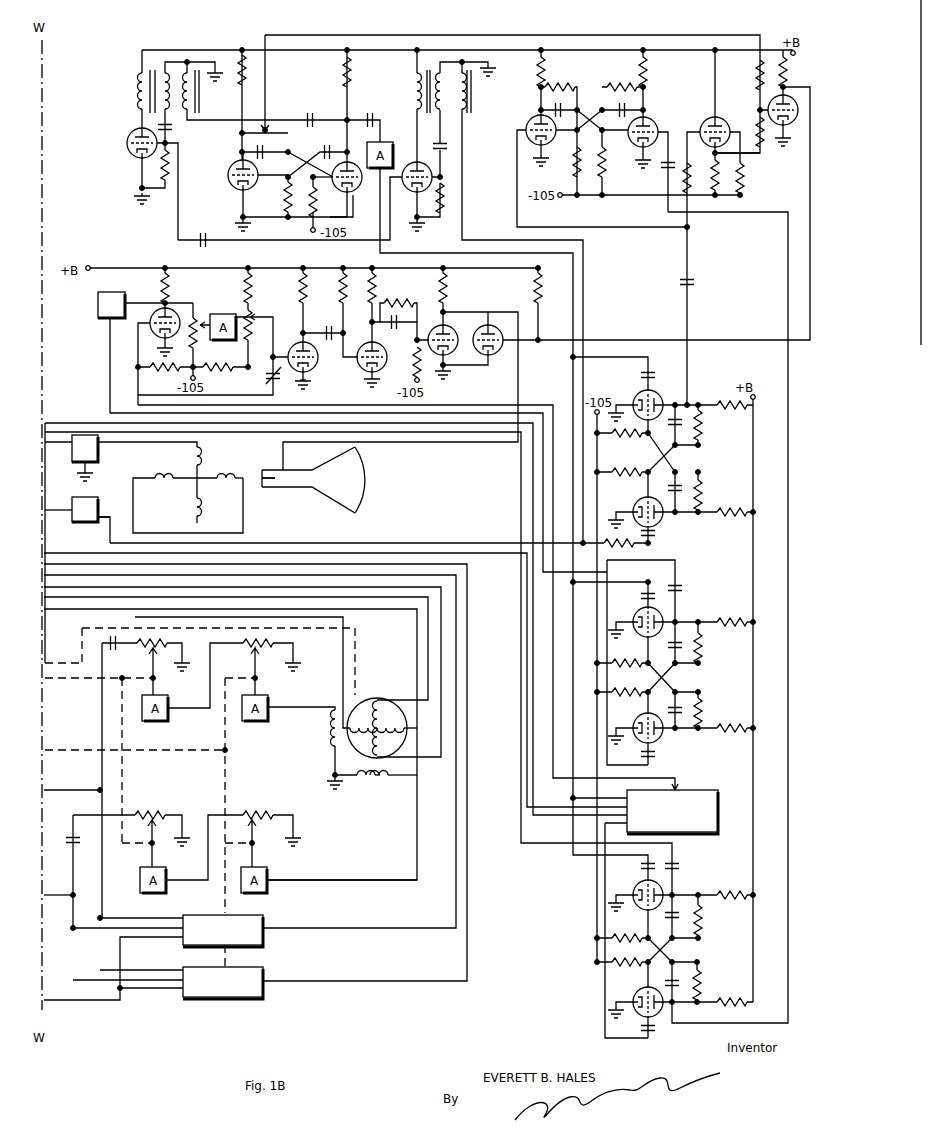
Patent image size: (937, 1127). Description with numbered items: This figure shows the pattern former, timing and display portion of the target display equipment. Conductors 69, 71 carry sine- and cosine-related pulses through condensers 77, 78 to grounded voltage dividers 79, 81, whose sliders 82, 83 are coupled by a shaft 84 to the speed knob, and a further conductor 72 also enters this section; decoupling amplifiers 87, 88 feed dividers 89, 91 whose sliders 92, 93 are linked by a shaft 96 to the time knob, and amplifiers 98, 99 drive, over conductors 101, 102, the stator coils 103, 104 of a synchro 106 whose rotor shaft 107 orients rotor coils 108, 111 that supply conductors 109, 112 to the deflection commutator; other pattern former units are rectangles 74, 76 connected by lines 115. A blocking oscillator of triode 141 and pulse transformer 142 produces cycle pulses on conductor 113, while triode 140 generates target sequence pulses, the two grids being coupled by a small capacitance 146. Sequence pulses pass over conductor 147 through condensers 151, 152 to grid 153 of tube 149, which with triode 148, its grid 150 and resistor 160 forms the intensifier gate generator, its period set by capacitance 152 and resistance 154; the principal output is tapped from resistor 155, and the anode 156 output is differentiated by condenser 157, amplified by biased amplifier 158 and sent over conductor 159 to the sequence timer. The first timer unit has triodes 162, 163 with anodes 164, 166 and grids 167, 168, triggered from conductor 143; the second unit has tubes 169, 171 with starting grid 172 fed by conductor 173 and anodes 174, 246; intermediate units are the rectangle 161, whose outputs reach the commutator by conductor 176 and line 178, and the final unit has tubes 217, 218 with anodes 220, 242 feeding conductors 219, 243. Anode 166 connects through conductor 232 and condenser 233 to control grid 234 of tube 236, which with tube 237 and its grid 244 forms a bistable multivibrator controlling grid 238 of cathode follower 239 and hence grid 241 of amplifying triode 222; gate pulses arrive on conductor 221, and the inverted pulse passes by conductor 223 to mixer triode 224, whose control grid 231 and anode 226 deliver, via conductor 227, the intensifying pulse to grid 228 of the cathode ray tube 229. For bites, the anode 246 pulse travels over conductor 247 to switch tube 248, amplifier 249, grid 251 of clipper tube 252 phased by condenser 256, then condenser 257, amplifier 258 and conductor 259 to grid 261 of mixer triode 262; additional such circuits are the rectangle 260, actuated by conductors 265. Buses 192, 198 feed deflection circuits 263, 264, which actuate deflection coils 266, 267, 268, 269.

The conductor 221 is at (735, 31).
The triode 149 is at (177, 40).
The triode 140 is at (128, 136).
The conductor 147 is at (234, 120).
The condenser 151 is at (300, 117).
The resistor 155 is at (240, 134).
The condenser 152 is at (328, 146).
The grid 153 is at (232, 185).
The resistor 154 is at (287, 208).
The anode 156 is at (346, 133).
The triode 148 is at (344, 204).
The grid 150 is at (331, 191).
The resistor 160 is at (339, 207).
The condenser 157 is at (370, 115).
The biased amplifier 158 is at (392, 147).
The conductor 159 is at (380, 228).
The capacitance 146 is at (203, 237).
The triode 141 is at (410, 190).
The pulse transformer 142 is at (500, 105).
The conductor 113 is at (465, 143).
The control grid 234 is at (528, 126).
The triode 236 is at (526, 137).
The triode 237 is at (637, 109).
The grid 244 is at (653, 130).
The conductor 243 is at (667, 172).
The cathode follower 239 is at (707, 122).
The grid 238 is at (736, 151).
The grid 241 is at (772, 104).
The amplifying triode 222 is at (779, 135).
The conductor 223 is at (809, 177).
The condenser 233 is at (685, 280).
The conductor 232 is at (686, 308).
The rectangle 260 is at (98, 305).
The switch tube 248 is at (192, 336).
The amplifier 249 is at (218, 313).
The conductor 247 is at (138, 398).
The grid 251 is at (307, 328).
The clipper amplifier tube 252 is at (316, 388).
The phasing condenser 256 is at (268, 382).
The condenser 257 is at (331, 323).
The amplifier 258 is at (358, 327).
The conductor 259 is at (388, 330).
The grid 261 is at (436, 311).
The triode 262 is at (400, 391).
The anode 226 is at (507, 311).
The mixer triode 224 is at (485, 363).
The control grid 231 is at (491, 352).
The conductor 227 is at (283, 457).
The intensifying grid 228 is at (286, 488).
The cathode ray tube 229 is at (368, 492).
The conductor 219 is at (64, 432).
The conductor 176 is at (80, 423).
The bus 192 is at (336, 619).
The deflection circuit 263 is at (96, 462).
The deflection coil 269 is at (200, 460).
The deflection coil 267 is at (193, 507).
The deflection coil 268 is at (188, 496).
The deflection coil 266 is at (230, 468).
The bus 198 is at (72, 510).
The deflection circuit 264 is at (97, 530).
The line 178 is at (68, 553).
The lines 115 is at (74, 575).
The conductors 112 is at (74, 597).
The conductors 109 is at (76, 617).
The rotor shaft 107 is at (64, 663).
The shaft 84 is at (45, 678).
The shaft 96 is at (66, 750).
The conductor 69 is at (70, 790).
The condenser 78 is at (73, 836).
The conductor 71 is at (66, 895).
The conductor 72 is at (45, 1000).
The condenser 77 is at (113, 650).
The grounded voltage divider 79 is at (160, 643).
The slider 82 is at (155, 680).
The decoupling amplifier 87 is at (152, 722).
The grounded voltage divider 89 is at (265, 643).
The slider 92 is at (257, 675).
The amplifier 98 is at (268, 695).
The conductor 101 is at (333, 715).
The stator coil 103 is at (330, 740).
The two-phase to two-phase synchro 106 is at (385, 802).
The stator coil 104 is at (395, 775).
The rotor coil 108 is at (407, 735).
The rotor coil 111 is at (407, 725).
The grounded voltage divider 81 is at (147, 812).
The slider 83 is at (150, 843).
The decoupling amplifier 88 is at (167, 875).
The grounded voltage divider 91 is at (252, 812).
The slider 93 is at (255, 843).
The amplifier 99 is at (268, 875).
The conductor 102 is at (316, 880).
The rectangle 74 is at (230, 937).
The rectangle 76 is at (230, 989).
The rectangle 161 is at (682, 819).
The group of conductors 265 is at (558, 815).
The conductor 173 is at (607, 752).
The triode 163 is at (644, 388).
The grid 168 is at (640, 400).
The anode 166 is at (653, 400).
The control grid 167 is at (640, 503).
The triode 162 is at (640, 527).
The anode 164 is at (660, 516).
The conductor 143 is at (662, 530).
The triode 171 is at (640, 618).
The anode 174 is at (660, 620).
The starting grid 172 is at (643, 716).
The triode 169 is at (645, 753).
The anode 246 is at (660, 732).
The triode 217 is at (640, 888).
The anode 220 is at (660, 893).
The triode 218 is at (640, 995).
The anode 242 is at (661, 1023).